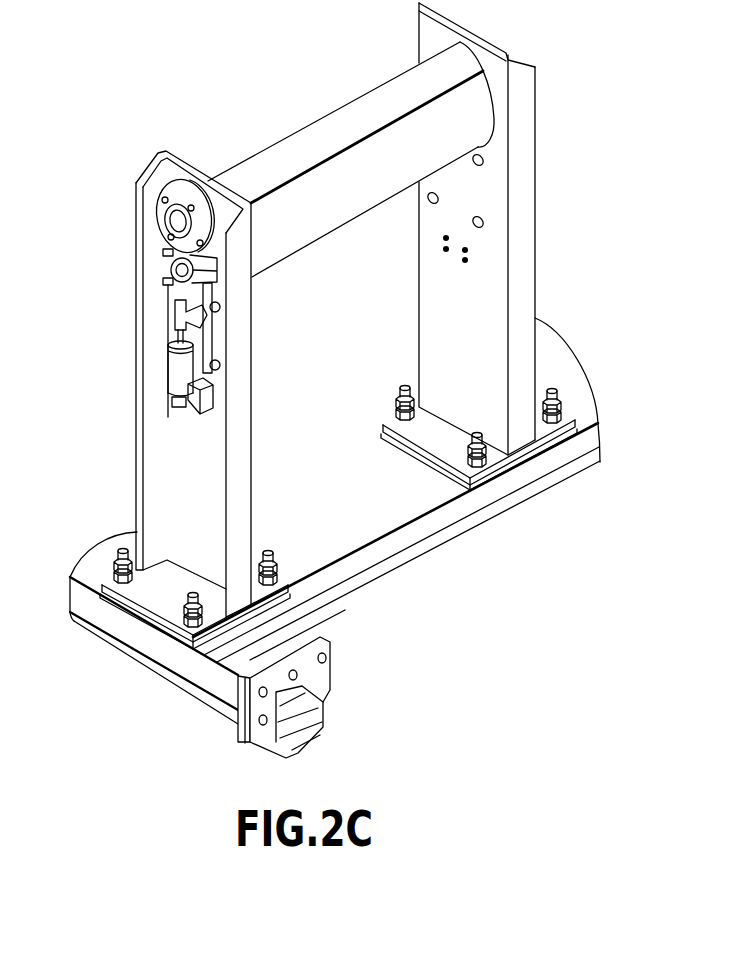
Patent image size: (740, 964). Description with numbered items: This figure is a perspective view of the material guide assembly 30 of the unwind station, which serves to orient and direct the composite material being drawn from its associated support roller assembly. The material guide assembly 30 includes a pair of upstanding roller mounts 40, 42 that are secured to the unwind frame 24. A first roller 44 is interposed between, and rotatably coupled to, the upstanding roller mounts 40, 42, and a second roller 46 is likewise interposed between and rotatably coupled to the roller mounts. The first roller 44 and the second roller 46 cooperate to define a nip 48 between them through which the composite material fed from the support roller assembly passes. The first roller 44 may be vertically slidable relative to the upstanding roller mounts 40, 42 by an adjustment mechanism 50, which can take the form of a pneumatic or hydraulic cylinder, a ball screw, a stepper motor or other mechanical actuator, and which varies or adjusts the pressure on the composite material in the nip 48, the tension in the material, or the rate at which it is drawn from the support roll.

The material guide assembly 30 is at (100, 216).
The unwind frame 24 is at (422, 543).
The upstanding roller mount 40 is at (240, 515).
The upstanding roller mount 42 is at (440, 312).
The first roller 44 is at (337, 217).
The second roller 46 is at (333, 132).
The nip 48 is at (449, 114).
The adjustment mechanism 50 is at (152, 378).